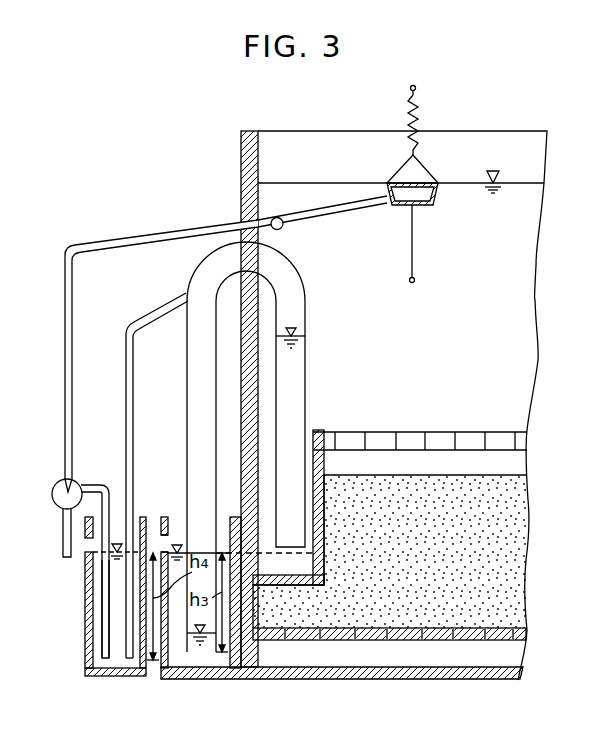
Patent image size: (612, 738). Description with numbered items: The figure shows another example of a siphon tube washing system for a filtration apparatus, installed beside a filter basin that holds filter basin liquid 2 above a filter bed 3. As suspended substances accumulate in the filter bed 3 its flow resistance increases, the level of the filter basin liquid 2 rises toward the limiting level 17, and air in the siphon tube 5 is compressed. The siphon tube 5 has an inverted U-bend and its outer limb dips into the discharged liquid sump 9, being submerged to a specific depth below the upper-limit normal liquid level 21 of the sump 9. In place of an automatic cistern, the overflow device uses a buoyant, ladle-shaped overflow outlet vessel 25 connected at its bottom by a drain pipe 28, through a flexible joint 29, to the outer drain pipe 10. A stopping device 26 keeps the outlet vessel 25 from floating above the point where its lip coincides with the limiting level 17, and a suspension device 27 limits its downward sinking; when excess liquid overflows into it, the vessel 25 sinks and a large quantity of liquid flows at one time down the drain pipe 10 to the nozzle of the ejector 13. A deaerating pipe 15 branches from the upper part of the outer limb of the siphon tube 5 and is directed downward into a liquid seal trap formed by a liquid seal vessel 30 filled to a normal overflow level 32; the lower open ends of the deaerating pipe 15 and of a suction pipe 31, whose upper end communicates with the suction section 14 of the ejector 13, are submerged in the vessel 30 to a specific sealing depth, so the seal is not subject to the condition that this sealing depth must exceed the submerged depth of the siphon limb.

The filter basin liquid 2 is at (531, 318).
The filter bed 3 is at (504, 579).
The siphon tube 5 is at (305, 300).
The discharged liquid sump 9 is at (161, 678).
The drain pipe 10 is at (110, 240).
The ejector 13 is at (54, 486).
The suction section 14 is at (80, 483).
The deaerating pipe 15 is at (133, 428).
The limiting level 17 is at (305, 181).
The upper-limit normal liquid level 21 is at (169, 543).
The overflow outlet vessel 25 is at (438, 203).
The stopping device 26 is at (412, 263).
The suspension device 27 is at (418, 100).
The drain pipe 28 is at (345, 222).
The flexible joint 29 is at (279, 217).
The liquid seal vessel 30 is at (101, 678).
The suction pipe 31 is at (104, 621).
The normal overflow level 32 is at (93, 548).